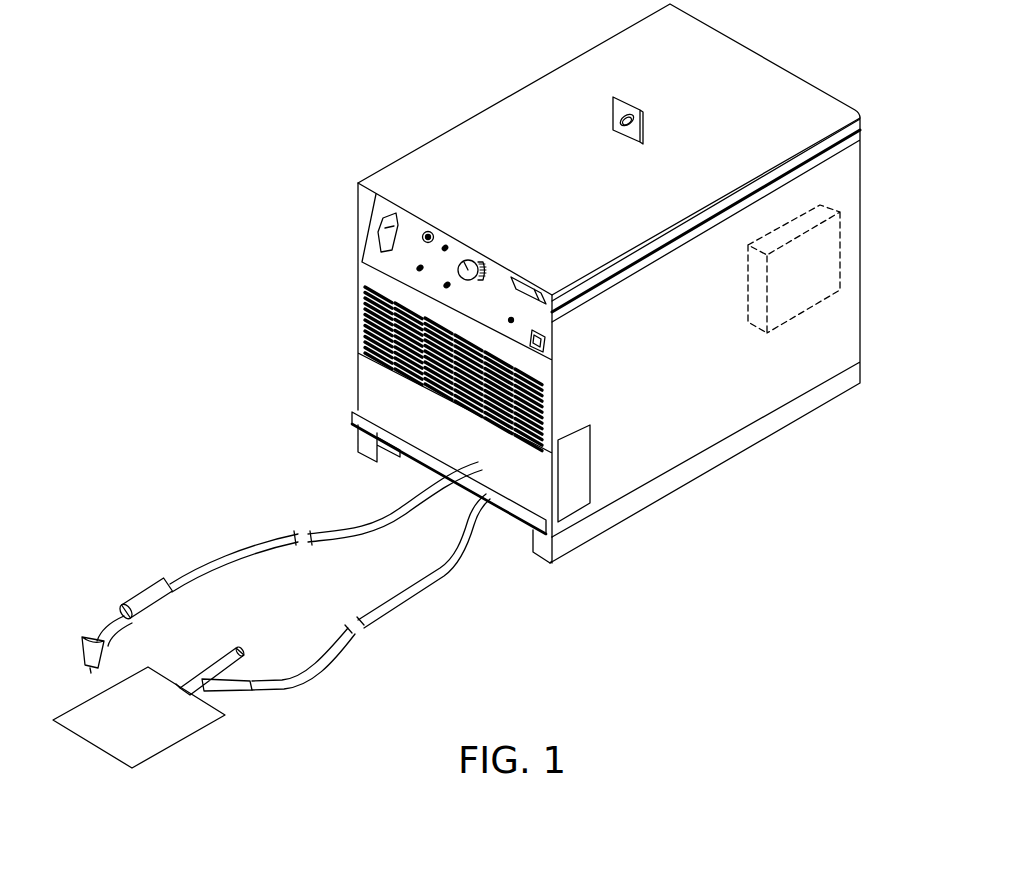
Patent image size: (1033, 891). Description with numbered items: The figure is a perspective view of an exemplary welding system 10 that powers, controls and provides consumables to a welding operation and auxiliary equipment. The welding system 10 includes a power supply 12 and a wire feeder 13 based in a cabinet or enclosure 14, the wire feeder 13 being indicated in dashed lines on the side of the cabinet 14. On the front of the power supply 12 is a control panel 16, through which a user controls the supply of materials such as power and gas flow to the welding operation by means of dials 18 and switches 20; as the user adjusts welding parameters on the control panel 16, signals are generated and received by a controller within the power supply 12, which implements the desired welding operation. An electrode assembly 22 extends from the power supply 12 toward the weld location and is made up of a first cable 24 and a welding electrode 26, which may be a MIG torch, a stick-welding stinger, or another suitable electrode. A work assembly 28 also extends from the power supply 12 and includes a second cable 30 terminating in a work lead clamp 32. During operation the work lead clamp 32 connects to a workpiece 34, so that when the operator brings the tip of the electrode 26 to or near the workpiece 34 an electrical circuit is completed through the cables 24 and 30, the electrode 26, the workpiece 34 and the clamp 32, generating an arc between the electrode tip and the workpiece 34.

The welding system 10 is at (606, 320).
The power supply 12 is at (696, 342).
The wire feeder 13 is at (803, 313).
The cabinet 14 is at (576, 205).
The control panel 16 is at (507, 298).
The dials 18 is at (466, 261).
The switches 20 is at (426, 256).
The electrode assembly 22 is at (278, 567).
The first cable 24 is at (232, 551).
The welding electrode 26 is at (99, 615).
The work assembly 28 is at (333, 620).
The second cable 30 is at (406, 603).
The work lead clamp 32 is at (235, 637).
The workpiece 34 is at (153, 733).